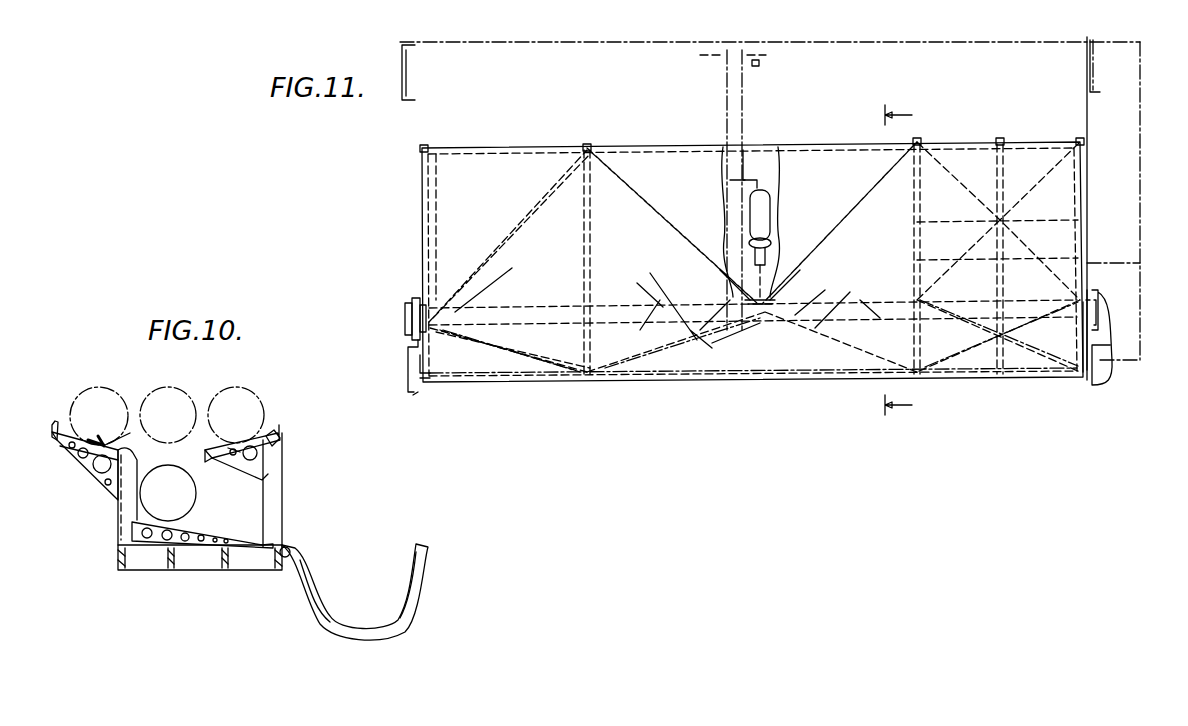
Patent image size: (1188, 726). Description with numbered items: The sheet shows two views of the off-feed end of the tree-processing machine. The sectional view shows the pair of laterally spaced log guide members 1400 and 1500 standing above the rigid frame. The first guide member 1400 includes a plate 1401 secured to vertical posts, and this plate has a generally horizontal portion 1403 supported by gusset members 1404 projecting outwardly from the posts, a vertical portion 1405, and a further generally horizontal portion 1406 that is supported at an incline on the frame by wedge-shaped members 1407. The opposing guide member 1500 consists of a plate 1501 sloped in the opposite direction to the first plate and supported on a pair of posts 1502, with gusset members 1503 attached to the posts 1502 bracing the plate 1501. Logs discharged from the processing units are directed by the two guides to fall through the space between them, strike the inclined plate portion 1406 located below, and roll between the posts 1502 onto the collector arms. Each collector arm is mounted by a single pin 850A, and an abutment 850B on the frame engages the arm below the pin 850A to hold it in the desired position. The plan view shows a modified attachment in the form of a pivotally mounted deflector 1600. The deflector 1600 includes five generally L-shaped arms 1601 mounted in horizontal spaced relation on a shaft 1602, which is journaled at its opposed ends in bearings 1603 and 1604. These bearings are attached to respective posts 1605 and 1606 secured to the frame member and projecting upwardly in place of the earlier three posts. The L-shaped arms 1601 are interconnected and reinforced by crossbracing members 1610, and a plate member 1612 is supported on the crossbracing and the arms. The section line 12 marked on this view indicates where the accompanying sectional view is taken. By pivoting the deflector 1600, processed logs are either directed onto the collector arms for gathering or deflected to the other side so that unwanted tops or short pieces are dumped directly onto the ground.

In FIG. 11, the section line 12- 12 is at (913, 261).
In FIG. 11, the deflector 1600 is at (548, 185).
In FIG. 11, the L-shaped arms 1601 is at (428, 217).
In FIG. 11, the shaft 1602 is at (501, 289).
In FIG. 11, the bearing 1603 is at (412, 300).
In FIG. 11, the bearing 1604 is at (1110, 360).
In FIG. 11, the post 1605 is at (410, 393).
In FIG. 11, the post 1606 is at (1086, 376).
In FIG. 11, the crossbracing members 1610 is at (512, 358).
In FIG. 11, the plate member 1612 is at (665, 165).
In FIG. 10, the log guide member 1400 is at (92, 440).
In FIG. 10, the plate 1401 is at (101, 438).
In FIG. 10, the generally horizontal portion 1403 is at (108, 447).
In FIG. 10, the gusset members 1404 is at (85, 478).
In FIG. 10, the vertical portion 1405 is at (143, 478).
In FIG. 10, the generally horizontal portion 1406 is at (188, 526).
In FIG. 10, the wedge-shaped members 1407 is at (178, 557).
In FIG. 10, the log guide member 1500 is at (281, 443).
In FIG. 10, the plate 1501 is at (227, 445).
In FIG. 10, the posts 1502 is at (275, 478).
In FIG. 10, the gusset members 1503 is at (243, 445).
In FIG. 10, the pin 850A is at (290, 547).
In FIG. 10, the abutment 850B is at (278, 574).